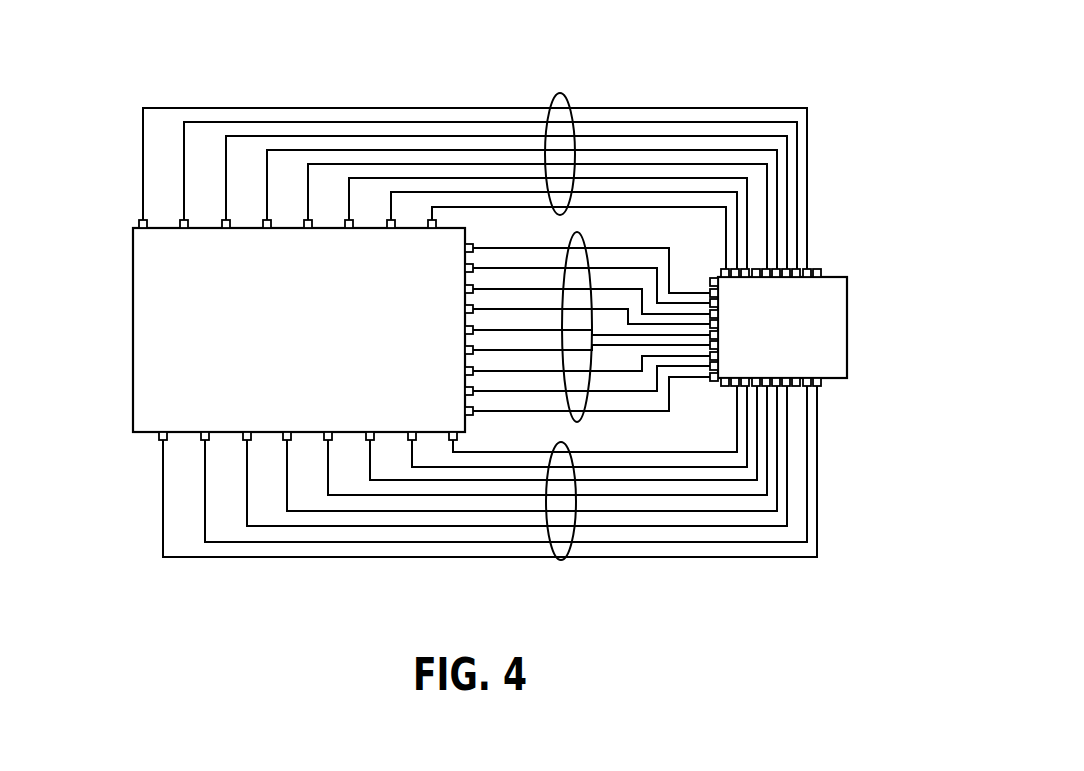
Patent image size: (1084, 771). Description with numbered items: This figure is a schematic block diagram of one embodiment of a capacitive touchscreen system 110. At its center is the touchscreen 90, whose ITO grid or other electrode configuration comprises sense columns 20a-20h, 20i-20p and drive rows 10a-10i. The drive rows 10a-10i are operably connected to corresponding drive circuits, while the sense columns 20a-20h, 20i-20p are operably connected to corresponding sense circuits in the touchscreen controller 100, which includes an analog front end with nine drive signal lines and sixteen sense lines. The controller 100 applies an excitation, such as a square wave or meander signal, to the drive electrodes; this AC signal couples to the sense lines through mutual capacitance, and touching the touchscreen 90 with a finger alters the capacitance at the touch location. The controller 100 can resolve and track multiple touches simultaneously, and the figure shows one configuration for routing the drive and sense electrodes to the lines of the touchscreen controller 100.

The capacitive touchscreen system 110 is at (118, 84).
The touchscreen 90 is at (158, 313).
The touchscreen controller 100 is at (847, 327).
The sense columns 20a-20h is at (557, 94).
The drive rows 10a-10i is at (577, 233).
The sense columns 20i-20p is at (560, 560).